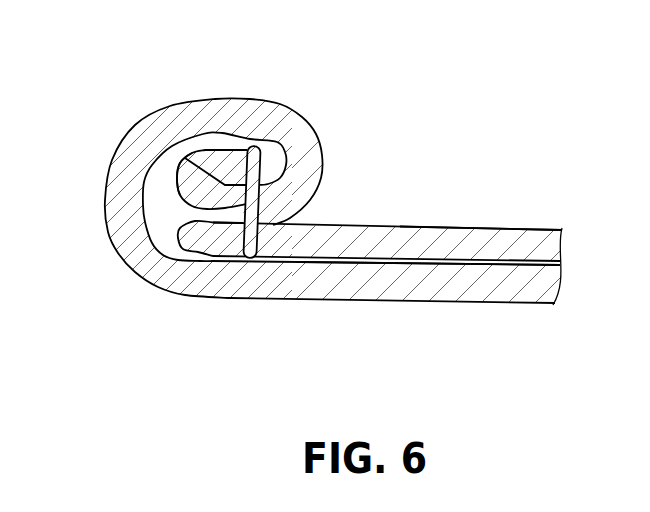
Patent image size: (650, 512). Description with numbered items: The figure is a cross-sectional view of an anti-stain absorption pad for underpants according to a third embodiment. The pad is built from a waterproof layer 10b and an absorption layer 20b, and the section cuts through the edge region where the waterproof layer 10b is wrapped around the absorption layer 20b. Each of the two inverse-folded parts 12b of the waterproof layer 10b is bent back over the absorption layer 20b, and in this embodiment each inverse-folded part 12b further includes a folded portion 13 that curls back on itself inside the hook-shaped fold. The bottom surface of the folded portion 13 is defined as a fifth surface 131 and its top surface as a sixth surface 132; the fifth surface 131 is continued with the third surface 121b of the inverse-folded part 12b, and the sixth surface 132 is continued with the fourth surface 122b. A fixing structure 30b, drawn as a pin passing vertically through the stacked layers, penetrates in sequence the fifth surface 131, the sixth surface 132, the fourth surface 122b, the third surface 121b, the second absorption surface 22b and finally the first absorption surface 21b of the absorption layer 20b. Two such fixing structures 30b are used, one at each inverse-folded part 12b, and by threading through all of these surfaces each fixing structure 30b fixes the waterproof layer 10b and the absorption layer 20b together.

The waterproof layer 10b is at (512, 302).
The inverse-folded part 12b is at (185, 257).
The folded portion 13 is at (221, 152).
The fifth surface 131 is at (227, 150).
The sixth surface 132 is at (177, 170).
The third surface 121b is at (232, 247).
The fourth surface 122b is at (215, 228).
The absorption layer 20b is at (536, 236).
The first absorption surface 21b is at (410, 262).
The second absorption surface 22b is at (475, 228).
The fixing structure 30b is at (262, 200).